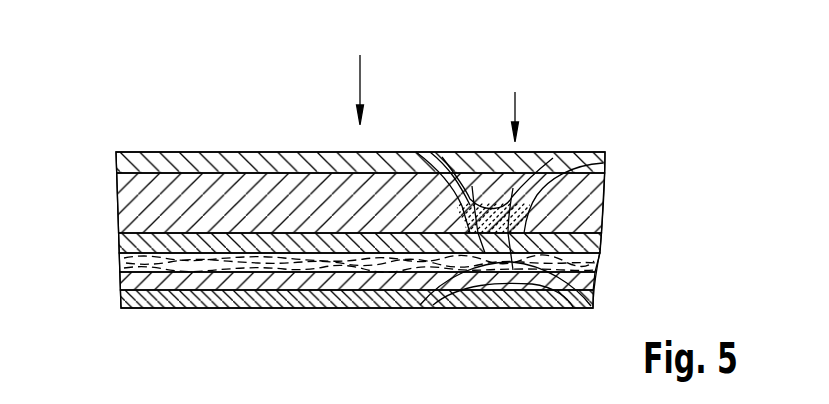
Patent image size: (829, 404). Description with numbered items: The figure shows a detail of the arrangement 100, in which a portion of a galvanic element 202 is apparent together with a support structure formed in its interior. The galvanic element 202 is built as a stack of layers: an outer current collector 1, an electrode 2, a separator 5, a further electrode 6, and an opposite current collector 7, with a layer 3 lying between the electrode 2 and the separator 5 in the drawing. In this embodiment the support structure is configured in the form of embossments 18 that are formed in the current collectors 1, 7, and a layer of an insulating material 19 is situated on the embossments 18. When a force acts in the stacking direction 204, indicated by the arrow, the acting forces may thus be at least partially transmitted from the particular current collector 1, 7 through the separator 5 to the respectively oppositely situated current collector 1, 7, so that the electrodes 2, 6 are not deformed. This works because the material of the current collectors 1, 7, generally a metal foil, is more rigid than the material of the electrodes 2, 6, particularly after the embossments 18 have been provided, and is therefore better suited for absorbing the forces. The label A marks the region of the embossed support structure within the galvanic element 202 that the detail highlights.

The current collector 1 is at (132, 302).
The electrode 2 is at (583, 275).
The intermediate layer (membrane) 3 is at (580, 271).
The separator 5 is at (583, 247).
The electrode 6 is at (152, 215).
The current collector 7 is at (185, 163).
The embossments 18 is at (513, 188).
The insulating material 19 is at (472, 186).
The arrangement 100 is at (438, 120).
The galvanic element 202 is at (668, 152).
The stacking direction 204 is at (362, 78).
The welding position A is at (516, 103).